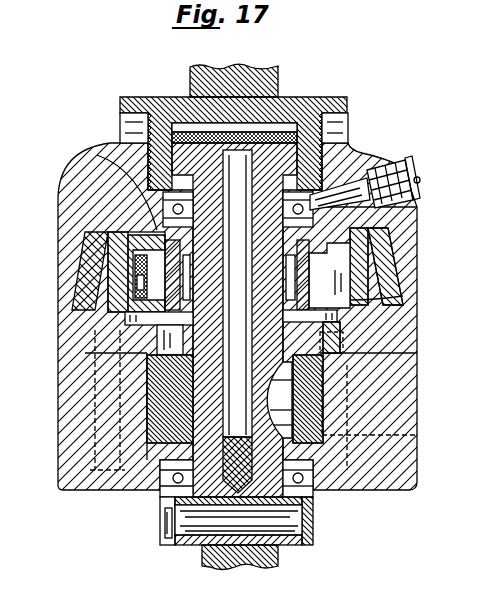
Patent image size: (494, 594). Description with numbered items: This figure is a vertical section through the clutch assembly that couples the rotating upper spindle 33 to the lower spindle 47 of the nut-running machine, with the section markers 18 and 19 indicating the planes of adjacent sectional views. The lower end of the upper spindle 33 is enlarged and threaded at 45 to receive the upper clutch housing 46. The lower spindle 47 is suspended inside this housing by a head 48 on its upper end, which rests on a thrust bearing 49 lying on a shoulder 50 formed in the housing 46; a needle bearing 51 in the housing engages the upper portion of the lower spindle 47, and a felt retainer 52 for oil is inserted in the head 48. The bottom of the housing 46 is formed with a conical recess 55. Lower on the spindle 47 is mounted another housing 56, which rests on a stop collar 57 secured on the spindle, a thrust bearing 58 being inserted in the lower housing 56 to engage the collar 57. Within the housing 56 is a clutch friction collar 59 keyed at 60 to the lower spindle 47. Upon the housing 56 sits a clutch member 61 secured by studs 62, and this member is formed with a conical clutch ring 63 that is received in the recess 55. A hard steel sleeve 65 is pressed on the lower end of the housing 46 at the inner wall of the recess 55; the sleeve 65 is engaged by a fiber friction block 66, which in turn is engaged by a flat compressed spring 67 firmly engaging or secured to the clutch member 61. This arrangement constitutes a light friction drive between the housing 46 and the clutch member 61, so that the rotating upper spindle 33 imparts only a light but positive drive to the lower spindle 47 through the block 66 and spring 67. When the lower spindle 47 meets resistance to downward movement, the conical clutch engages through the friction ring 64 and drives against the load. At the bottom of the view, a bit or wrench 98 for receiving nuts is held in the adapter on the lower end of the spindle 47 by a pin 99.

The section line 18- 18 is at (60, 400).
The section line 19- 19 is at (65, 278).
The upper spindle 33 is at (262, 68).
The threaded enlarged lower end 45 is at (299, 100).
The upper clutch housing 46 is at (63, 192).
The lower spindle 47 is at (97, 155).
The head 48 is at (348, 136).
The thrust bearing 49 is at (360, 162).
The shoulder 50 is at (412, 203).
The needle bearing 51 is at (290, 272).
The felt retainer 52 is at (183, 132).
The conical recess 55 is at (110, 232).
The lower housing 56 is at (397, 372).
The stop collar 57 is at (290, 542).
The thrust bearing 58 is at (314, 490).
The clutch friction collar 59 is at (305, 425).
The key 60 is at (279, 400).
The clutch member 61 is at (394, 333).
The studs 62 is at (419, 440).
The conical clutch ring 63 is at (360, 255).
The friction ring 64 is at (394, 290).
The hard steel sleeve 65 is at (390, 315).
The fiber friction block 66 is at (140, 287).
The flat compressed spring 67 is at (92, 317).
The bit or wrench 98 is at (269, 567).
The pin 99 is at (315, 522).